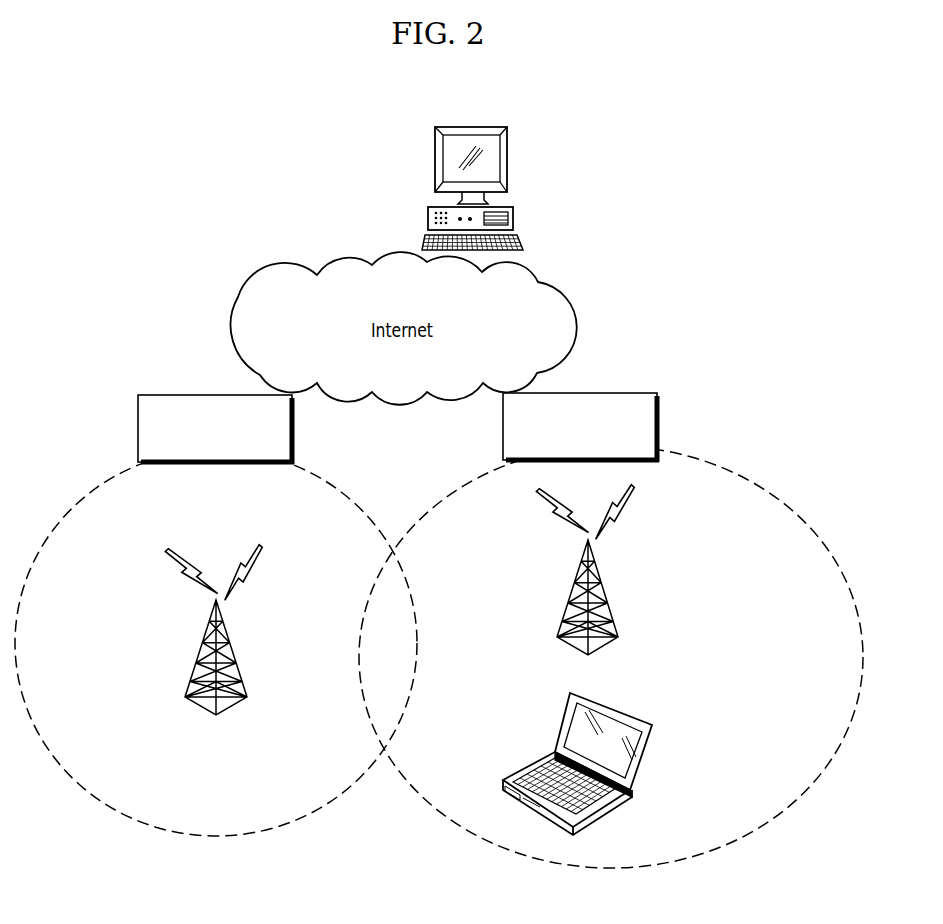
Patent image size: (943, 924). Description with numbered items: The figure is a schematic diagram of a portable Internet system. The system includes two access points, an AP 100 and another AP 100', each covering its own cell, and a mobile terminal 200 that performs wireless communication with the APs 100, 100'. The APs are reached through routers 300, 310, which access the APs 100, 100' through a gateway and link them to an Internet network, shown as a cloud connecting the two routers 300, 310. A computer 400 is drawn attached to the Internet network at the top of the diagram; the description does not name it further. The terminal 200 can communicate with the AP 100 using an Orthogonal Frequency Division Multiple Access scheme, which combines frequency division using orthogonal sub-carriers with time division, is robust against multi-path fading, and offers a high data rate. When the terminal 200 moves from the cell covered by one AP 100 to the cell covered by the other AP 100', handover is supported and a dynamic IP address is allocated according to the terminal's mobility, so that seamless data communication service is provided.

The server computer 400 is at (508, 157).
The router 310 is at (138, 419).
The router 300 is at (657, 421).
The AP 100' is at (192, 630).
The AP 100 is at (616, 570).
The mobile terminal 200 is at (651, 750).